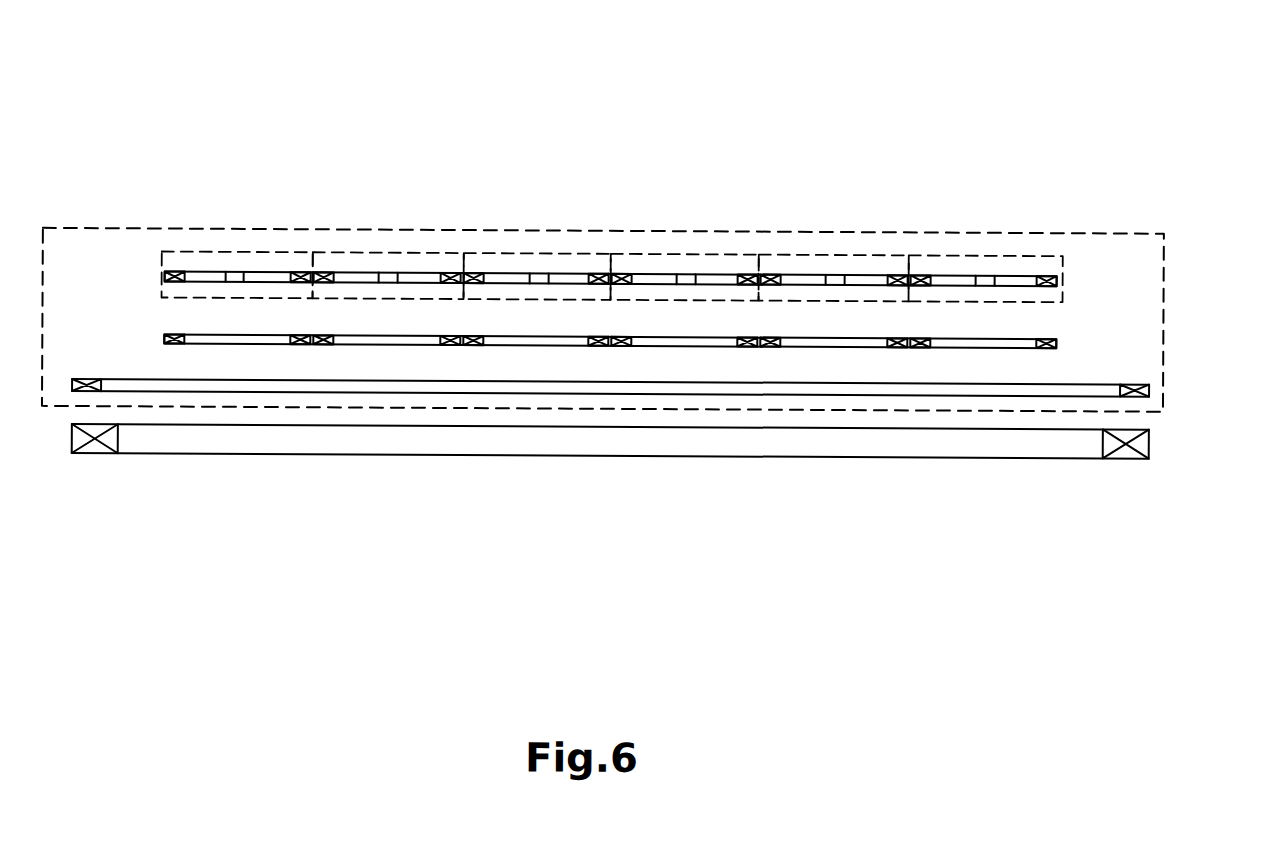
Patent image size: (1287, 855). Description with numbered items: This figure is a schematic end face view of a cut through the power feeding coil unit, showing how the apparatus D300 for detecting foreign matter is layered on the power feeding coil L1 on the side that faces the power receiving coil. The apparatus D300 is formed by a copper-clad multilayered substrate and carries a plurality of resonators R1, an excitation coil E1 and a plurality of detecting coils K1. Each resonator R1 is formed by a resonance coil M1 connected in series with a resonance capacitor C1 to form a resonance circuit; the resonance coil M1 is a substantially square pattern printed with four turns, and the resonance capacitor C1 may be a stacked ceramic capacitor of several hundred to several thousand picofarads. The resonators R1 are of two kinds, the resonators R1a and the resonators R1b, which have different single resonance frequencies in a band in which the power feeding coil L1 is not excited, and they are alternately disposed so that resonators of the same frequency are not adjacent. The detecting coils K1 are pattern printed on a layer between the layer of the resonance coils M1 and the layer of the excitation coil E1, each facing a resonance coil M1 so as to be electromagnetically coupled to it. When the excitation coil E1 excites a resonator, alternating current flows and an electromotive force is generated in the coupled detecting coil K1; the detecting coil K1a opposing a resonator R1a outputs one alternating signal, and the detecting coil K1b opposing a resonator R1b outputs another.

The apparatus for detecting foreign matter D300 is at (1163, 228).
The resonator R1 is at (1150, 109).
The resonator R1a is at (290, 251).
The resonator R1b is at (440, 251).
The resonance coil M1 is at (176, 271).
The resonance capacitor C1 is at (233, 271).
The detecting coil K1 is at (1027, 524).
The detecting coil K1a is at (298, 344).
The detecting coil K1b is at (447, 344).
The excitation coil E1 is at (1150, 380).
The power feeding coil L1 is at (1126, 453).